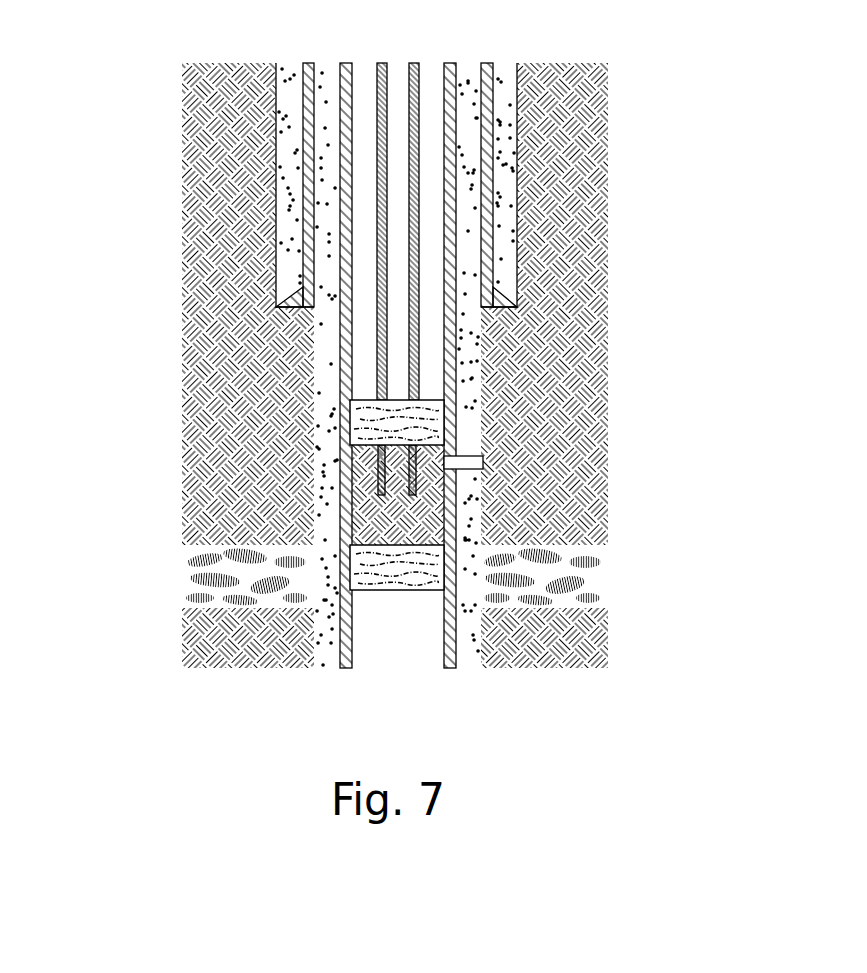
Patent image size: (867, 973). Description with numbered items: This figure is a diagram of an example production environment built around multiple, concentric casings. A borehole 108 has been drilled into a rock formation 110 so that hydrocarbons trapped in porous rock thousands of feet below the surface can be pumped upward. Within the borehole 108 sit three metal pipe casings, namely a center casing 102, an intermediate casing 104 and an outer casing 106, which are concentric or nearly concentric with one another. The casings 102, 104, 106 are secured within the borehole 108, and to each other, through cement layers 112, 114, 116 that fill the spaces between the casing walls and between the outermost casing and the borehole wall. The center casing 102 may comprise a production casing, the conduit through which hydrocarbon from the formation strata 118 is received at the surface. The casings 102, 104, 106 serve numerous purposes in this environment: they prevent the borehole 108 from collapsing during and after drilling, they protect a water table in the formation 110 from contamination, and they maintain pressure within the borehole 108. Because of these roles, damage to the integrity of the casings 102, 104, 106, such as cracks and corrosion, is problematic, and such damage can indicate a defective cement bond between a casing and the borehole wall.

The center casing 102 is at (380, 394).
The casing 104 is at (345, 270).
The casing 106 is at (308, 115).
The borehole 108 is at (512, 260).
The rock formation 110 is at (575, 128).
The cement layer 112 is at (358, 338).
The cement layer 114 is at (328, 187).
The cement layer 116 is at (287, 75).
The formation strata 118 is at (575, 502).